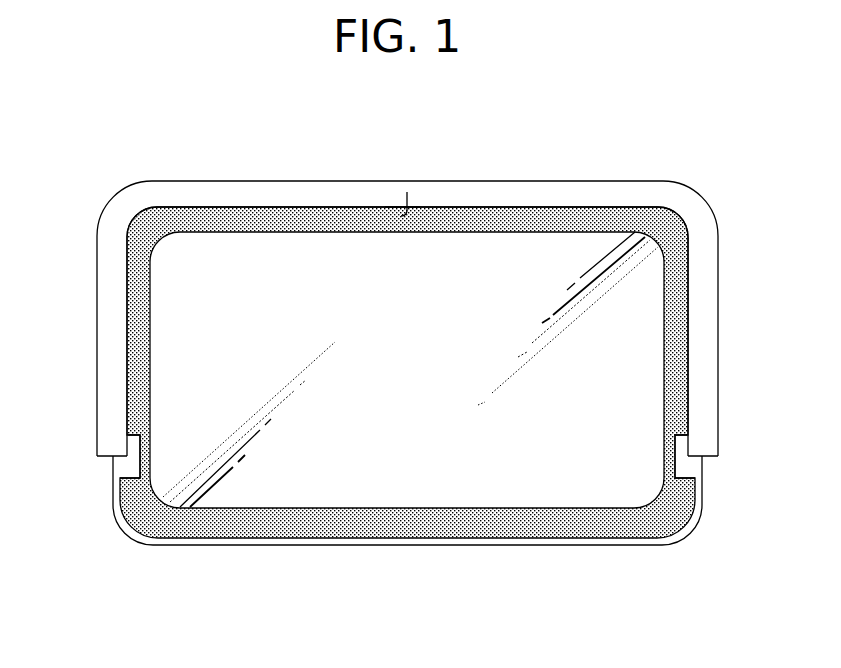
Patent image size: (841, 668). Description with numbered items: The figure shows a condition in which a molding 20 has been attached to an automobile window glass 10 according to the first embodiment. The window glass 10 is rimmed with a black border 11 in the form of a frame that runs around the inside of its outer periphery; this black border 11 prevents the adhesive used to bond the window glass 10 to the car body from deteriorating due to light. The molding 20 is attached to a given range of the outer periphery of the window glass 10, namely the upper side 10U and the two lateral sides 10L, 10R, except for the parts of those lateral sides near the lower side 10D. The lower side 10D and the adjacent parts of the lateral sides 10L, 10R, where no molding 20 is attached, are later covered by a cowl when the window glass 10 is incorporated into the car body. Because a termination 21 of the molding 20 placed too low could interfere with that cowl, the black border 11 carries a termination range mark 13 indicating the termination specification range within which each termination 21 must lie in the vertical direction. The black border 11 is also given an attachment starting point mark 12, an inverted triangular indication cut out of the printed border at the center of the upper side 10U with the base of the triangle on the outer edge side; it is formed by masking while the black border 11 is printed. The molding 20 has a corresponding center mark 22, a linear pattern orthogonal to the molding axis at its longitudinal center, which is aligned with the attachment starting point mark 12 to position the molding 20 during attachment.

The window glass 10 is at (418, 374).
The upper side 10U is at (624, 207).
The lower side 10D is at (482, 546).
The lateral side 10L is at (112, 504).
The lateral side 10R is at (703, 505).
The black border 11 is at (453, 522).
The attachment starting point mark 12 is at (400, 219).
The termination range mark 13 is at (135, 458).
The molding 20 is at (552, 180).
The termination 21 is at (107, 459).
The center mark 22 is at (407, 193).